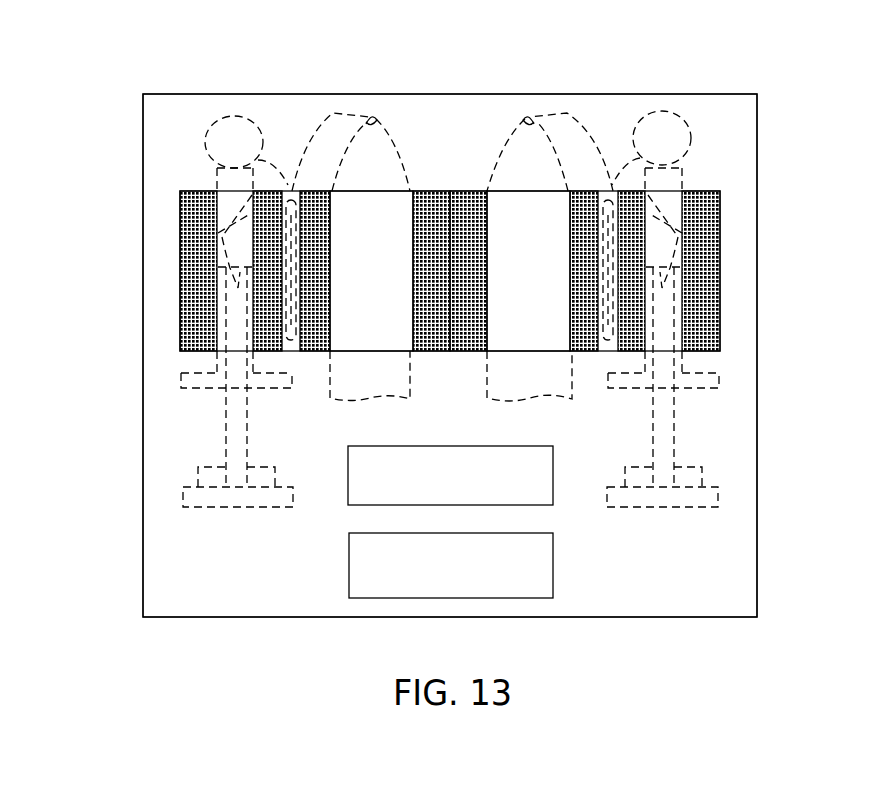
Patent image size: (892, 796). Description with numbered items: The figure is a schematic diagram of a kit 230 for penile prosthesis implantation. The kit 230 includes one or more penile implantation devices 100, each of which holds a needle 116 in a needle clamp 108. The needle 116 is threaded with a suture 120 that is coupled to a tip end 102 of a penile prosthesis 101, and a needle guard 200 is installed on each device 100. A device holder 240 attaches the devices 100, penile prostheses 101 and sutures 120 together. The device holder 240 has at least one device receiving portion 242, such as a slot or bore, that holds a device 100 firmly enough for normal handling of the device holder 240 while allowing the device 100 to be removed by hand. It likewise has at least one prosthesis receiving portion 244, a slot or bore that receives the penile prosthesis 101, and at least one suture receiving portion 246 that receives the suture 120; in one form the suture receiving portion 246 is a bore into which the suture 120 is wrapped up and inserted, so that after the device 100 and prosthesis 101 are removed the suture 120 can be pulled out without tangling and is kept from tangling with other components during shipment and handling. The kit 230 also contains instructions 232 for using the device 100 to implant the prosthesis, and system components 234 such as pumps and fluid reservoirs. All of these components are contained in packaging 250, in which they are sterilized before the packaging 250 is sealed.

The kit 230 is at (134, 58).
The packaging 250 is at (143, 437).
The device holder 240 is at (182, 192).
The device receiving portion 242 is at (218, 313).
The prosthesis receiving portion 244 is at (388, 290).
The suture receiving portion 246 is at (294, 352).
The penile prosthesis 101 is at (406, 406).
The needle guard 200 is at (207, 131).
The suture 120 is at (330, 108).
The tip end 102 is at (396, 145).
The needle 116 is at (215, 215).
The needle clamp 108 is at (215, 255).
The penile implantation device 100 is at (252, 450).
The instructions 232 is at (465, 447).
The system components 234 is at (550, 558).